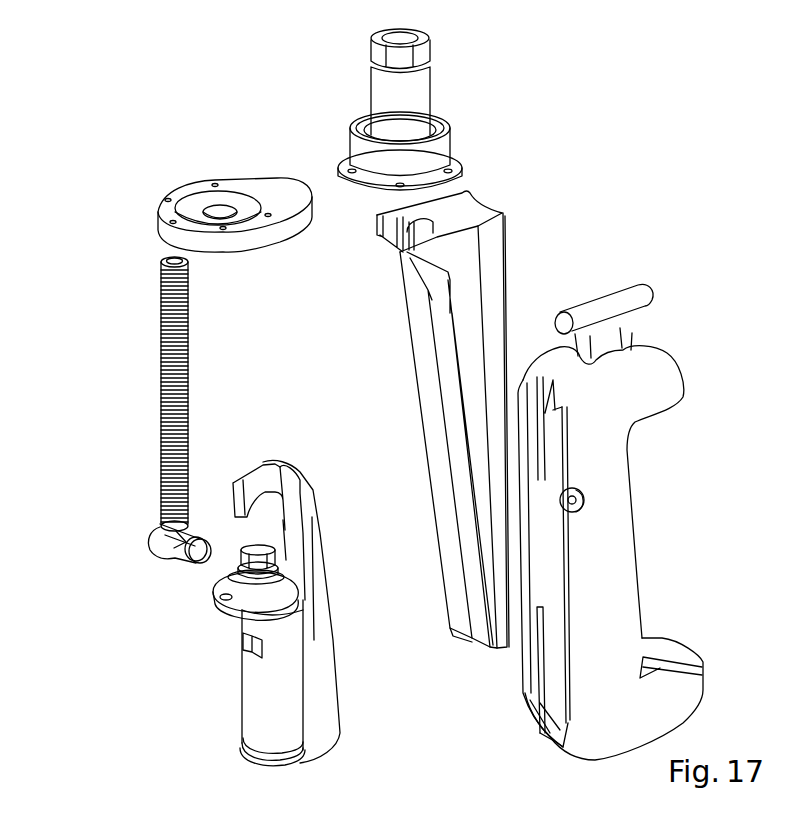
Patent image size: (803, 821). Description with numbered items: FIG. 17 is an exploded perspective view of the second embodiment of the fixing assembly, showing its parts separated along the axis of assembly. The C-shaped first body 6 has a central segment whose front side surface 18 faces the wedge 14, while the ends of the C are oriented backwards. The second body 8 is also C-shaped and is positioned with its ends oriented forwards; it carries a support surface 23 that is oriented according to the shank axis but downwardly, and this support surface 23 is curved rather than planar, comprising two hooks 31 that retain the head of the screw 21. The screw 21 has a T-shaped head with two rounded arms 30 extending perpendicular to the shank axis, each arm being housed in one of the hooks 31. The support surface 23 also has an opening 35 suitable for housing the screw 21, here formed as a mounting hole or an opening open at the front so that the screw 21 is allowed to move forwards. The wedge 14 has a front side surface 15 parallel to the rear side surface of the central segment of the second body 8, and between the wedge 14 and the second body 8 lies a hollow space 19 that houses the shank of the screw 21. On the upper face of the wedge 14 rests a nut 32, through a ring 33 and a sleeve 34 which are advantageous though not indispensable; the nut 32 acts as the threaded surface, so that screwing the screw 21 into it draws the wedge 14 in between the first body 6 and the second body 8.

The first body 6 is at (650, 388).
The second body 8 is at (268, 700).
The wedge 14 is at (500, 255).
The front side surface 15 is at (475, 600).
The front side surface 18 is at (555, 653).
The hollow space 19 is at (420, 280).
The screw 21 is at (162, 415).
The support surface 23 is at (287, 510).
The rounded arms 30 is at (183, 562).
The hooks 31 is at (243, 490).
The nut 32 is at (418, 52).
The ring 33 is at (263, 197).
The sleeve 34 is at (415, 107).
The opening 35 is at (380, 230).